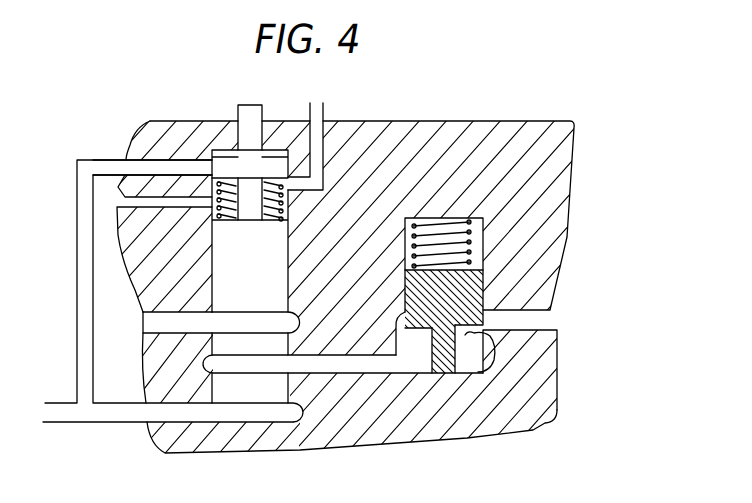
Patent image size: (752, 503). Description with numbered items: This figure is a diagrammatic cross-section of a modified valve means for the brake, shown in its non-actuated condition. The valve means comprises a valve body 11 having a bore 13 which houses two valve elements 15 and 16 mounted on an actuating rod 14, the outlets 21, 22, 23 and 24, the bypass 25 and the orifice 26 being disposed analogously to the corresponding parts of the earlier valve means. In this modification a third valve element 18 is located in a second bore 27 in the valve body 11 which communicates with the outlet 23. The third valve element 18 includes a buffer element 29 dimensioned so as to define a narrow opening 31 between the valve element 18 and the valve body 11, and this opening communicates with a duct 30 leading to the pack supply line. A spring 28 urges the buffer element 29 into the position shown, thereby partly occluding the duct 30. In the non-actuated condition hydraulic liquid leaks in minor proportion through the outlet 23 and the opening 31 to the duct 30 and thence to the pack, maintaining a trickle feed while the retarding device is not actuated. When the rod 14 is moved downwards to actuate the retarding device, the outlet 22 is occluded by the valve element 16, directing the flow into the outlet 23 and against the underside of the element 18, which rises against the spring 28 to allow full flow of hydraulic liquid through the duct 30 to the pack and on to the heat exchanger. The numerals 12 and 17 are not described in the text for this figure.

The valve body 11 is at (465, 85).
The piston 12 is at (220, 210).
The bore 13 is at (284, 204).
The actuating rod 14 is at (301, 85).
The valve element 15 is at (223, 160).
The valve element 16 is at (223, 282).
The spring 17 is at (221, 190).
The third valve element 18 is at (614, 314).
The outlet 21 is at (167, 412).
The outlet 22 is at (223, 320).
The outlet 23 is at (300, 362).
The outlet 24 is at (379, 85).
The bypass 25 is at (84, 265).
The orifice 26 is at (123, 180).
The second bore 27 is at (480, 240).
The spring 28 is at (485, 263).
The buffer element 29 is at (443, 363).
The duct 30 is at (543, 322).
The narrow opening 31 is at (490, 368).